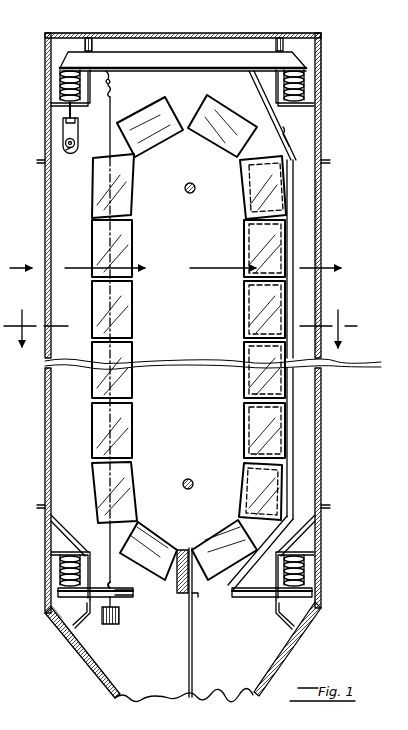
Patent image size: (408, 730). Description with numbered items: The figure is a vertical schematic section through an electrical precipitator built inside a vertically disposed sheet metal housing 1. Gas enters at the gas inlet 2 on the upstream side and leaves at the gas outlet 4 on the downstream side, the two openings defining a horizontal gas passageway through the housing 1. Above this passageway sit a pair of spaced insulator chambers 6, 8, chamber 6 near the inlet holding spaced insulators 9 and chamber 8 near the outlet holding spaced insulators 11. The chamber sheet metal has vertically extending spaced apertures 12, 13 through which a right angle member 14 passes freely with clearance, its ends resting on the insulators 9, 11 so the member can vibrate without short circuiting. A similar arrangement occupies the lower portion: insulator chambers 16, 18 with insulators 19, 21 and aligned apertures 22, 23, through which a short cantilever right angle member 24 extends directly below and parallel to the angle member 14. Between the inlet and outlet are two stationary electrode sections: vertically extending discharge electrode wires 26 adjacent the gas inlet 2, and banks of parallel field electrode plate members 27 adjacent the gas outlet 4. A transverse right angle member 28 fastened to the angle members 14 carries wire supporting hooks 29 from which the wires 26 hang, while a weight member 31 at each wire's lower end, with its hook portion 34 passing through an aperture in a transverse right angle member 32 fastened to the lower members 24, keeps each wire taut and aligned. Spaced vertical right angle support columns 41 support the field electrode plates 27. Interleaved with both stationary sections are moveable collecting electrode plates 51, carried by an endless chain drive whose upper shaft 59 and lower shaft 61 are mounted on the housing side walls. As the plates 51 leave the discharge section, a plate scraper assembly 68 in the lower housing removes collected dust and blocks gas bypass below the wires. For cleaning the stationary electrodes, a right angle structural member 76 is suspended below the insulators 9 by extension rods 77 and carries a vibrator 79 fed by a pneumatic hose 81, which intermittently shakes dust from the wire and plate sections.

The housing 1 is at (322, 152).
The gas inlet 2 is at (45, 228).
The gas outlet 4 is at (319, 288).
The insulator chamber 6 is at (60, 48).
The insulator chamber 8 is at (299, 46).
The insulators 9 is at (60, 85).
The insulators 11 is at (304, 86).
The apertures 12 is at (93, 48).
The apertures 13 is at (279, 50).
The right angle member 14 is at (176, 58).
The insulator chamber 16 is at (82, 620).
The insulator chamber 18 is at (292, 620).
The insulators 19 is at (60, 571).
The insulators 21 is at (305, 574).
The apertures 22 is at (95, 577).
The apertures 23 is at (272, 599).
The right angle member 24 is at (52, 605).
The discharge electrode wires 26 is at (120, 323).
The field electrode plate members 27 is at (287, 226).
The right angle member 28 is at (112, 74).
The wire supporting hook 29 is at (112, 91).
The weight member 31 is at (120, 615).
The right angle member 32 is at (133, 592).
The hook portion 34 is at (114, 582).
The right angle support columns 41 is at (282, 115).
The collecting electrode plates 51 is at (127, 390).
The upper shaft 59 is at (194, 190).
The lower shaft 61 is at (193, 488).
The plate scraper assembly 68 is at (197, 580).
The right angle structural member 76 is at (78, 125).
The extension rods 77 is at (68, 113).
The vibrator 79 is at (75, 143).
The pneumatic hose 81 is at (68, 148).